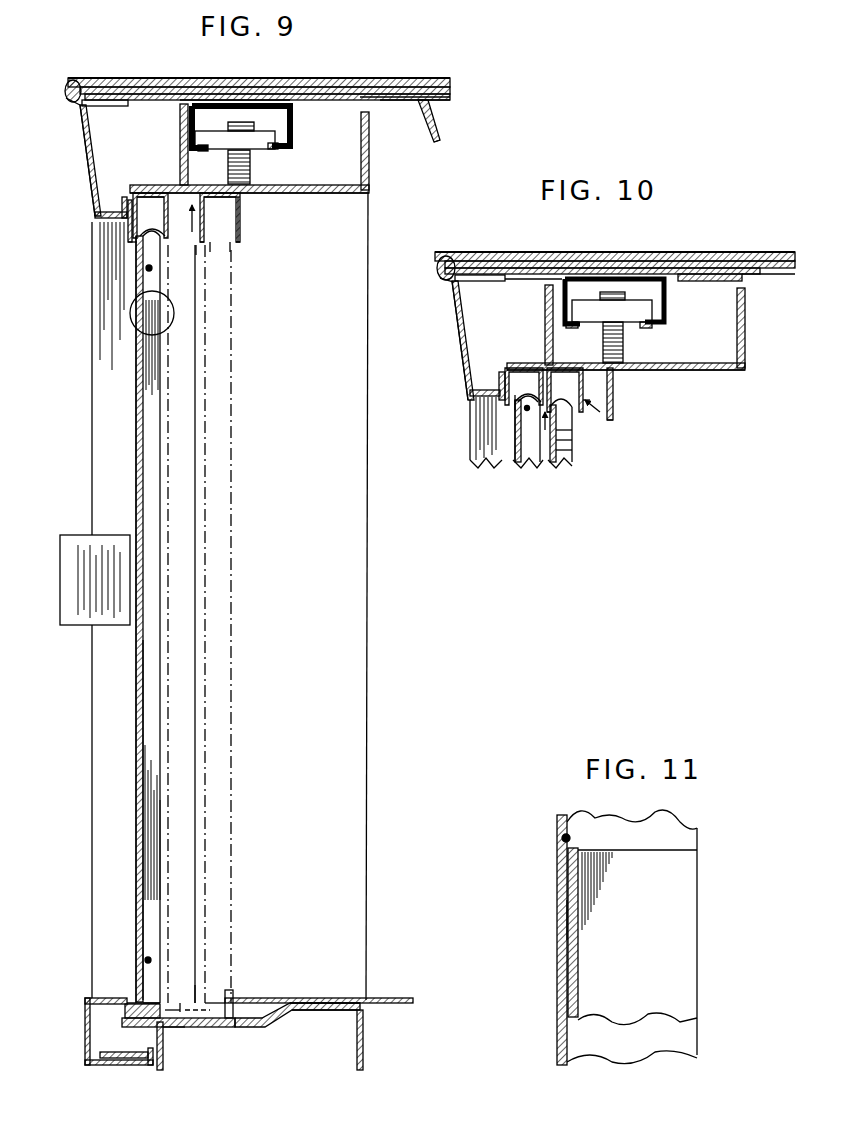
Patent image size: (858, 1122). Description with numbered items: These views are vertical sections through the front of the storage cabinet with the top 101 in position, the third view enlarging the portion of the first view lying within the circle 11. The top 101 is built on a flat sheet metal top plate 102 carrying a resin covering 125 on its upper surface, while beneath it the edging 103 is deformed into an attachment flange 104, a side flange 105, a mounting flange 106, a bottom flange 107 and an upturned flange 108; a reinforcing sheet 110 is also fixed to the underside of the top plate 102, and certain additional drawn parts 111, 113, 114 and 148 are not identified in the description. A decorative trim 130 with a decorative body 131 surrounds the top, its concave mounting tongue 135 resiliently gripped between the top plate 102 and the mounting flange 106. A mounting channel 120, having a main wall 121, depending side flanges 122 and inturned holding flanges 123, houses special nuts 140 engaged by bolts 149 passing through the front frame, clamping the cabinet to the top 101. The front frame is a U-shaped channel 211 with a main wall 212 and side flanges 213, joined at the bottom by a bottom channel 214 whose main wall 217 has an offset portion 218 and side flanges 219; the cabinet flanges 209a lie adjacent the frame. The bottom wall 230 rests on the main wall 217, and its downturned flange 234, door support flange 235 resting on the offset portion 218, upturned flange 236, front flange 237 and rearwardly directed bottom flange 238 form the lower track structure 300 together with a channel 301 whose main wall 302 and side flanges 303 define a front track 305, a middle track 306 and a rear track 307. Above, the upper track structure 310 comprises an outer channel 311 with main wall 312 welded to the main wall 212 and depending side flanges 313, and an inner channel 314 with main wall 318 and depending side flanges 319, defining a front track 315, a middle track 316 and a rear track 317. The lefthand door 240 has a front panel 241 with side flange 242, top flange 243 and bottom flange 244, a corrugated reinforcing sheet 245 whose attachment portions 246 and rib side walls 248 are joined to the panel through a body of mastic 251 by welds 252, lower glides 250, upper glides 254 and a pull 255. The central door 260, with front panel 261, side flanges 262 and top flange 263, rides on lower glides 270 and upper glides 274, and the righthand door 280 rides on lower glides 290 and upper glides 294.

In FIG. 9, the circle 11 is at (131, 322).
In FIG. 9, the top 101 is at (112, 74).
In FIG. 10, the top 101 is at (708, 246).
In FIG. 9, the top plate 102 is at (123, 76).
In FIG. 10, the top plate 102 is at (722, 252).
In FIG. 9, the edging 103 is at (88, 162).
In FIG. 10, the edging 103 is at (458, 328).
In FIG. 9, the attachment flange 104 is at (190, 97).
In FIG. 10, the attachment flange 104 is at (540, 276).
In FIG. 9, the side flange 105 is at (84, 137).
In FIG. 10, the side flange 105 is at (462, 350).
In FIG. 9, the mounting flange 106 is at (104, 105).
In FIG. 10, the mounting flange 106 is at (488, 281).
In FIG. 9, the bottom flange 107 is at (96, 215).
In FIG. 10, the bottom flange 107 is at (470, 394).
In FIG. 9, the upturned flange 108 is at (122, 198).
In FIG. 10, the upturned flange 108 is at (498, 374).
In FIG. 9, the reinforcing sheet 110 is at (444, 144).
In FIG. 9, the flange 111 is at (392, 101).
In FIG. 10, the flange 111 is at (766, 278).
In FIG. 9, the hanging tab 113 is at (436, 128).
In FIG. 9, the edge layer 114 is at (370, 90).
In FIG. 10, the edge layer 114 is at (745, 266).
In FIG. 9, the mounting channel 120 is at (238, 128).
In FIG. 10, the mounting channel 120 is at (618, 252).
In FIG. 9, the main wall 121 is at (282, 87).
In FIG. 10, the main wall 121 is at (660, 252).
In FIG. 9, the depending side flanges 122 is at (293, 130).
In FIG. 10, the depending side flanges 122 is at (585, 302).
In FIG. 9, the inturned holding flanges 123 is at (278, 147).
In FIG. 10, the inturned holding flanges 123 is at (572, 328).
In FIG. 9, the covering 125 is at (312, 87).
In FIG. 10, the covering 125 is at (478, 252).
In FIG. 10, the decorative trim 130 is at (444, 280).
In FIG. 9, the decorative body 131 is at (76, 101).
In FIG. 9, the mounting tongue 135 is at (66, 86).
In FIG. 10, the mounting tongue 135 is at (437, 262).
In FIG. 9, the special nuts 140 is at (214, 128).
In FIG. 10, the special nuts 140 is at (652, 315).
In FIG. 9, the screw 148 is at (251, 172).
In FIG. 10, the bolts 149 is at (624, 348).
In FIG. 9, the rearwardly directed flanges 209a is at (105, 440).
In FIG. 10, the rearwardly directed flanges 209a is at (470, 462).
In FIG. 9, the U-shaped channel 211 is at (332, 202).
In FIG. 10, the U-shaped channel 211 is at (690, 372).
In FIG. 9, the main wall 212 is at (330, 194).
In FIG. 10, the main wall 212 is at (720, 370).
In FIG. 9, the side flanges 213 is at (178, 130).
In FIG. 10, the side flanges 213 is at (745, 322).
In FIG. 9, the bottom channel 214 is at (322, 1020).
In FIG. 9, the main wall 217 is at (313, 1003).
In FIG. 9, the offset portion 218 is at (210, 1027).
In FIG. 9, the side flanges 219 is at (164, 1055).
In FIG. 9, the bottom wall 230 is at (389, 996).
In FIG. 9, the downturned flange 234 is at (240, 998).
In FIG. 9, the door support flange 235 is at (192, 1027).
In FIG. 9, the upturned flange 236 is at (130, 1020).
In FIG. 9, the front flange 237 is at (86, 1040).
In FIG. 9, the rearwardly directed bottom flange 238 is at (100, 1065).
In FIG. 9, the lefthand door 240 is at (133, 384).
In FIG. 10, the lefthand door 240 is at (505, 458).
In FIG. 9, the front panel 241 is at (135, 702).
In FIG. 10, the front panel 241 is at (516, 462).
In FIG. 11, the front panel 241 is at (557, 868).
In FIG. 9, the side flange 242 is at (137, 300).
In FIG. 10, the side flange 242 is at (530, 465).
In FIG. 11, the side flange 242 is at (699, 845).
In FIG. 9, the top flange 243 is at (140, 236).
In FIG. 10, the top flange 243 is at (522, 462).
In FIG. 9, the bottom flange 244 is at (135, 1003).
In FIG. 9, the reinforcing sheet 245 is at (136, 488).
In FIG. 11, the reinforcing sheet 245 is at (698, 928).
In FIG. 9, the attachment portions 246 is at (135, 658).
In FIG. 11, the attachment portions 246 is at (578, 985).
In FIG. 9, the side walls 248 is at (148, 805).
In FIG. 9, the lower glides 250 is at (125, 1012).
In FIG. 11, the body of mastic 251 is at (560, 838).
In FIG. 11, the welds 252 is at (562, 920).
In FIG. 9, the upper glides 254 is at (146, 271).
In FIG. 10, the upper glides 254 is at (525, 409).
In FIG. 9, the pull 255 is at (70, 577).
In FIG. 9, the central door 260 is at (198, 508).
In FIG. 10, the central door 260 is at (565, 458).
In FIG. 10, the front panel 261 is at (560, 460).
In FIG. 10, the side flanges 262 is at (568, 435).
In FIG. 10, the top flange 263 is at (573, 445).
In FIG. 9, the lower glides 270 is at (182, 1008).
In FIG. 9, the upper glides 274 is at (196, 252).
In FIG. 9, the righthand door 280 is at (234, 585).
In FIG. 9, the lower glides 290 is at (196, 1012).
In FIG. 9, the upper glides 294 is at (202, 242).
In FIG. 9, the lower track structure 300 is at (118, 980).
In FIG. 9, the channel 301 is at (202, 988).
In FIG. 9, the main wall 302 is at (172, 1030).
In FIG. 9, the side flanges 303 is at (182, 1028).
In FIG. 9, the front track 305 is at (150, 1008).
In FIG. 9, the middle track 306 is at (176, 1008).
In FIG. 9, the rear track 307 is at (212, 1010).
In FIG. 9, the upper track structure 310 is at (128, 224).
In FIG. 9, the outer channel 311 is at (226, 206).
In FIG. 10, the outer channel 311 is at (616, 400).
In FIG. 9, the main wall 312 is at (222, 215).
In FIG. 10, the main wall 312 is at (590, 372).
In FIG. 9, the depending side flanges 313 is at (235, 246).
In FIG. 10, the depending side flanges 313 is at (600, 380).
In FIG. 9, the inner channel 314 is at (230, 252).
In FIG. 10, the inner channel 314 is at (590, 405).
In FIG. 9, the front track 315 is at (126, 248).
In FIG. 10, the front track 315 is at (512, 405).
In FIG. 9, the middle track 316 is at (210, 252).
In FIG. 10, the middle track 316 is at (585, 408).
In FIG. 9, the rear track 317 is at (240, 220).
In FIG. 10, the rear track 317 is at (602, 412).
In FIG. 9, the main wall 318 is at (164, 194).
In FIG. 10, the main wall 318 is at (530, 368).
In FIG. 9, the depending side flanges 319 is at (133, 194).
In FIG. 10, the depending side flanges 319 is at (546, 432).